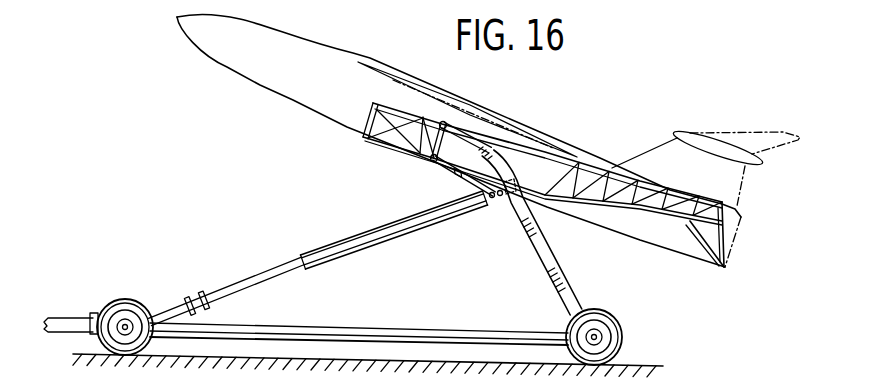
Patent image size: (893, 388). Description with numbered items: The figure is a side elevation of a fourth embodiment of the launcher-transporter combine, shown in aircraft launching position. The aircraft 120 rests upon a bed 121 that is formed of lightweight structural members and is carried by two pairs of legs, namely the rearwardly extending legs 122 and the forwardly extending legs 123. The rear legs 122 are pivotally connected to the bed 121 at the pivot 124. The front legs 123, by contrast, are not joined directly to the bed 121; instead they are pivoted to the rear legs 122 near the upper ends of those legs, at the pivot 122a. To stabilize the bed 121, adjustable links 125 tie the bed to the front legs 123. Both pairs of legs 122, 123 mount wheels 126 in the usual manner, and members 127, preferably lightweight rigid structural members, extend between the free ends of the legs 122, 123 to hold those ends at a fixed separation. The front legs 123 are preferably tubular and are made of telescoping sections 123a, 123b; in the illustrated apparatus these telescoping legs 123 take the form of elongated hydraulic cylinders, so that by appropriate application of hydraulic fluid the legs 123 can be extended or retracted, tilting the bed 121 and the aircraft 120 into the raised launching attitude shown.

The aircraft 120 is at (353, 54).
The bed 121 is at (373, 107).
The rearwardly extending legs 122 is at (564, 275).
The pivot connection of forward legs to rear legs 122a is at (505, 193).
The forwardly extending legs 123 is at (318, 258).
The telescoping section 123a is at (388, 236).
The telescoping section 123b is at (250, 288).
The pivotal connection of rear legs to bed 124 is at (444, 124).
The adjustable links 125 is at (456, 176).
The wheels 126 is at (113, 298).
The members 127 is at (357, 332).